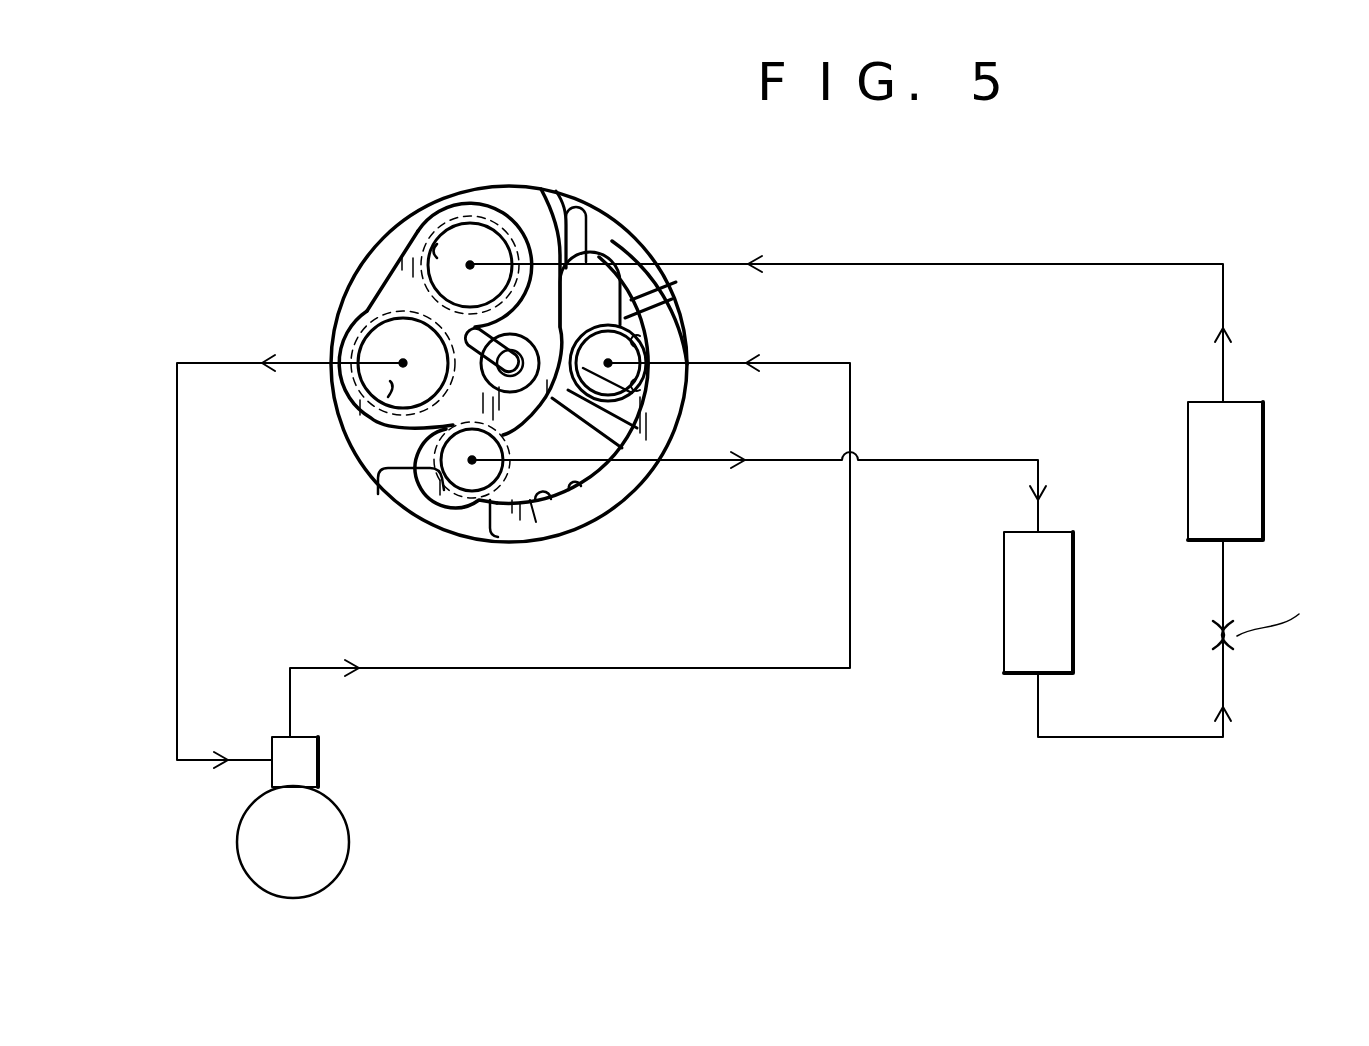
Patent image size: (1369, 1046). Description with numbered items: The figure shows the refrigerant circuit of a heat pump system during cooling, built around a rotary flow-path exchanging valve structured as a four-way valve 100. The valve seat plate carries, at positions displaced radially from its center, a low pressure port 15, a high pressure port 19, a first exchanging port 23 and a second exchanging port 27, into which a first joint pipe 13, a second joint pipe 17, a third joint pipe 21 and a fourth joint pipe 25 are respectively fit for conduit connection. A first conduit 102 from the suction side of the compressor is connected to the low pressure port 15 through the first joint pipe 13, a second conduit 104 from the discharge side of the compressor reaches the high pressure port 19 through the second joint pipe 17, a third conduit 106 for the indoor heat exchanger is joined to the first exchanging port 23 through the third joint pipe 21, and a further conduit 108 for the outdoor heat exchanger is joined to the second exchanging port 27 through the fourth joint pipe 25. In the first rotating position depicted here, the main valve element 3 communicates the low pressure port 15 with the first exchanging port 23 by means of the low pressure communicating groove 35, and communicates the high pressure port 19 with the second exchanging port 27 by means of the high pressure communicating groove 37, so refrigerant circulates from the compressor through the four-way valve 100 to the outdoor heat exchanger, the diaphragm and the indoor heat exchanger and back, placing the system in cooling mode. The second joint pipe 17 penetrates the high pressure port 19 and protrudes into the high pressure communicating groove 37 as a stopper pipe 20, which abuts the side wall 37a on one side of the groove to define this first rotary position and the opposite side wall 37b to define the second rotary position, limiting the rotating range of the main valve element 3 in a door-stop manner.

The main valve element 3 is at (603, 210).
The first joint pipe 13 is at (337, 401).
The low pressure port 15 is at (388, 397).
The second joint pipe 17 is at (640, 374).
The high pressure port 19 is at (645, 352).
The stopper pipe 20 is at (632, 338).
The third joint pipe 21 is at (437, 257).
The first exchanging port 23 is at (472, 222).
The fourth joint pipe 25 is at (460, 482).
The second exchanging port 27 is at (470, 500).
The low pressure communicating groove 35 is at (407, 283).
The high pressure communicating groove 37 is at (578, 491).
The side wall 37a is at (655, 398).
The side wall 37b is at (548, 505).
The four-way valve 100 is at (660, 224).
The first conduit 102 is at (177, 540).
The second conduit 104 is at (854, 391).
The third conduit 106 is at (974, 262).
The conduit 108 is at (976, 460).